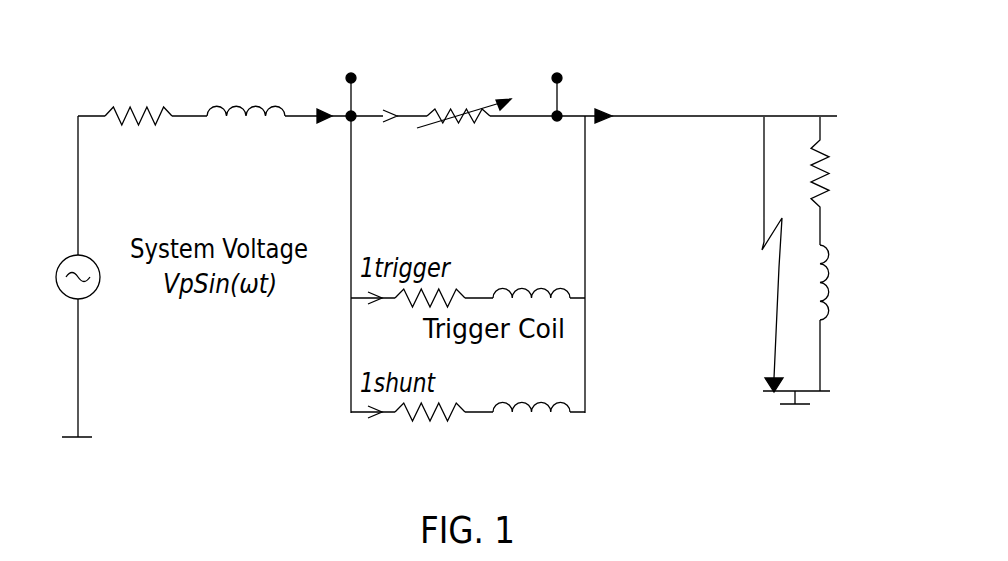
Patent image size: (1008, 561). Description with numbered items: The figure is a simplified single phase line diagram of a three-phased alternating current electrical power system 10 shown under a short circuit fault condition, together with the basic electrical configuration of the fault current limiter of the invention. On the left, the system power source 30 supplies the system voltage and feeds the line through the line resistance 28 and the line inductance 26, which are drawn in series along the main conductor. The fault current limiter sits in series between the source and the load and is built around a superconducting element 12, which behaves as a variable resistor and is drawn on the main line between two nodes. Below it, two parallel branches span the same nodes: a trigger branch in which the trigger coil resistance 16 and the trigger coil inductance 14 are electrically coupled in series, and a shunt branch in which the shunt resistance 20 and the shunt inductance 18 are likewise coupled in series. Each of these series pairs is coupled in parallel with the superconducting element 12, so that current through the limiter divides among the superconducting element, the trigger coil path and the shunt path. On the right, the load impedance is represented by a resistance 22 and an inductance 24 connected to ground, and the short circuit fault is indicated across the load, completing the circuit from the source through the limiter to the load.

The electrical power system 10 is at (708, 39).
The superconducting element 12 is at (490, 122).
The trigger coil inductance 14 is at (550, 290).
The trigger coil resistance 16 is at (452, 292).
The shunt inductance 18 is at (550, 405).
The shunt resistance 20 is at (442, 422).
The load resistance 22 is at (829, 174).
The load inductance 24 is at (818, 293).
The line inductance 26 is at (245, 103).
The line resistance 28 is at (152, 103).
The system power source 30 is at (85, 299).